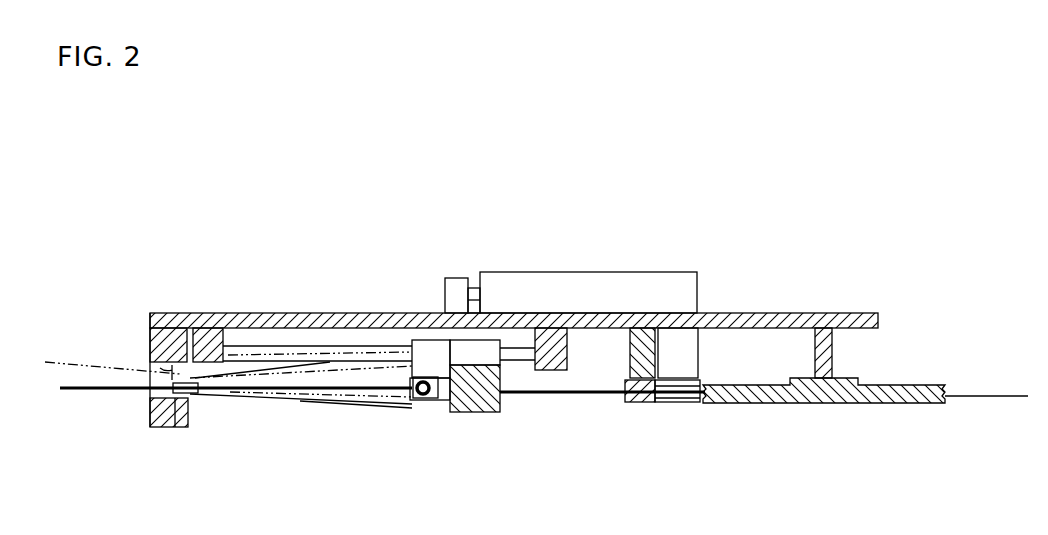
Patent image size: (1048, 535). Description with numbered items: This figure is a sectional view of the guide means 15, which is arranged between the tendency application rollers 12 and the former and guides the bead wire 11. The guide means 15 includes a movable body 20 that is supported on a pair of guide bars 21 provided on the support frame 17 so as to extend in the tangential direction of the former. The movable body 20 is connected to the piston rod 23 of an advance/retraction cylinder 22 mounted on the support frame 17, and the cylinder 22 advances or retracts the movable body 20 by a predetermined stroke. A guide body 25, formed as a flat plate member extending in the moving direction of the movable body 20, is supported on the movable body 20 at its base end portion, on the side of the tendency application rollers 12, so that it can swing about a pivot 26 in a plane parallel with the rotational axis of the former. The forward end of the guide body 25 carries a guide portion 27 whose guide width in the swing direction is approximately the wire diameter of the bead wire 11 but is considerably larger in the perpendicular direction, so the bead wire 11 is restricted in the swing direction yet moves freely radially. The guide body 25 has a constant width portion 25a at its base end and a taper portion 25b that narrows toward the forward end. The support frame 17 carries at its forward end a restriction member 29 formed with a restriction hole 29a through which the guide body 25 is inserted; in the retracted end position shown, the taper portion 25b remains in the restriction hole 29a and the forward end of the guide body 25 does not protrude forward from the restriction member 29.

The guide means 15 is at (361, 289).
The guide bars 21 is at (320, 313).
The movable body 20 is at (420, 340).
The piston rod 23 is at (471, 288).
The advance/retraction cylinder 22 is at (585, 272).
The support frame 17 is at (818, 313).
The restriction hole 29a is at (165, 368).
The restriction member 29 is at (155, 415).
The guide portion 27 is at (178, 428).
The taper portion 25b is at (230, 400).
The guide body 25 is at (306, 402).
The constant width portion 25a is at (352, 400).
The pivot 26 is at (424, 398).
The bead wire 11 is at (548, 395).
The tendency application rollers 12 is at (714, 403).